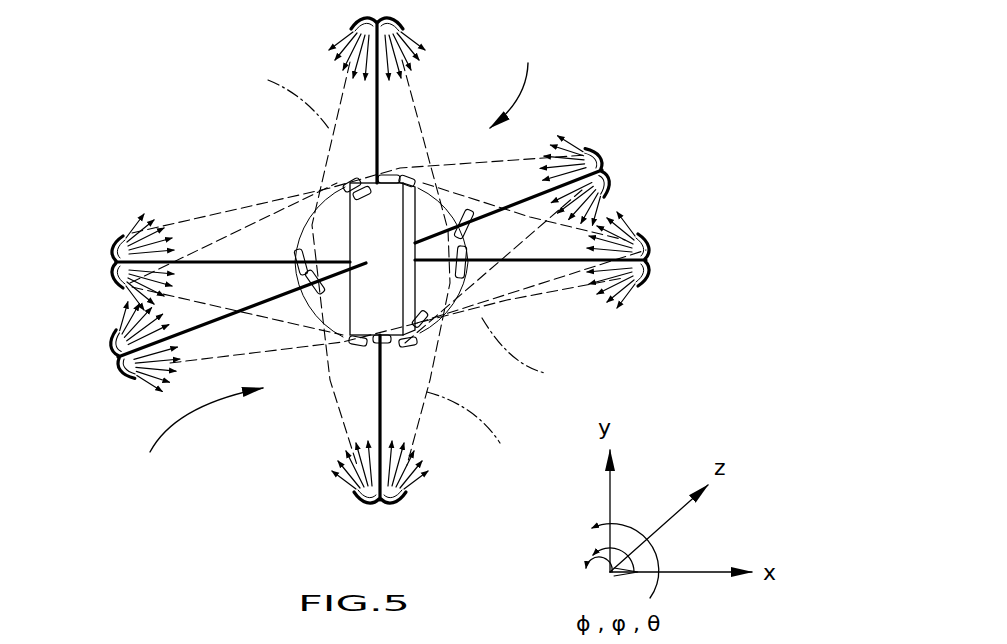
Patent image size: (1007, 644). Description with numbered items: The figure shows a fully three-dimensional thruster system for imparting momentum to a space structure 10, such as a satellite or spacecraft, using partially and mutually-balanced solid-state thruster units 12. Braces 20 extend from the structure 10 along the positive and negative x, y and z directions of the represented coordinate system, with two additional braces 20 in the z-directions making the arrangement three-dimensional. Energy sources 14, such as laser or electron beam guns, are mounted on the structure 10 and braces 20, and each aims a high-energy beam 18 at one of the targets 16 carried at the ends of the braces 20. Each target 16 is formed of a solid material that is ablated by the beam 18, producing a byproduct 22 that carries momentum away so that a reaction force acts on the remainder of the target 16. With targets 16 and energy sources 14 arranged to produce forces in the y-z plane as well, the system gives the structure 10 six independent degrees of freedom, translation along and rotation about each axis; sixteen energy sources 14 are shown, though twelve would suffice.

The space structure 10 is at (340, 209).
The thruster unit 12 is at (336, 259).
The energy source 14 is at (352, 180).
The target 16 is at (423, 0).
The high-energy beam 18 is at (410, 270).
The brace 20 is at (378, 128).
The byproduct 22 is at (410, 43).